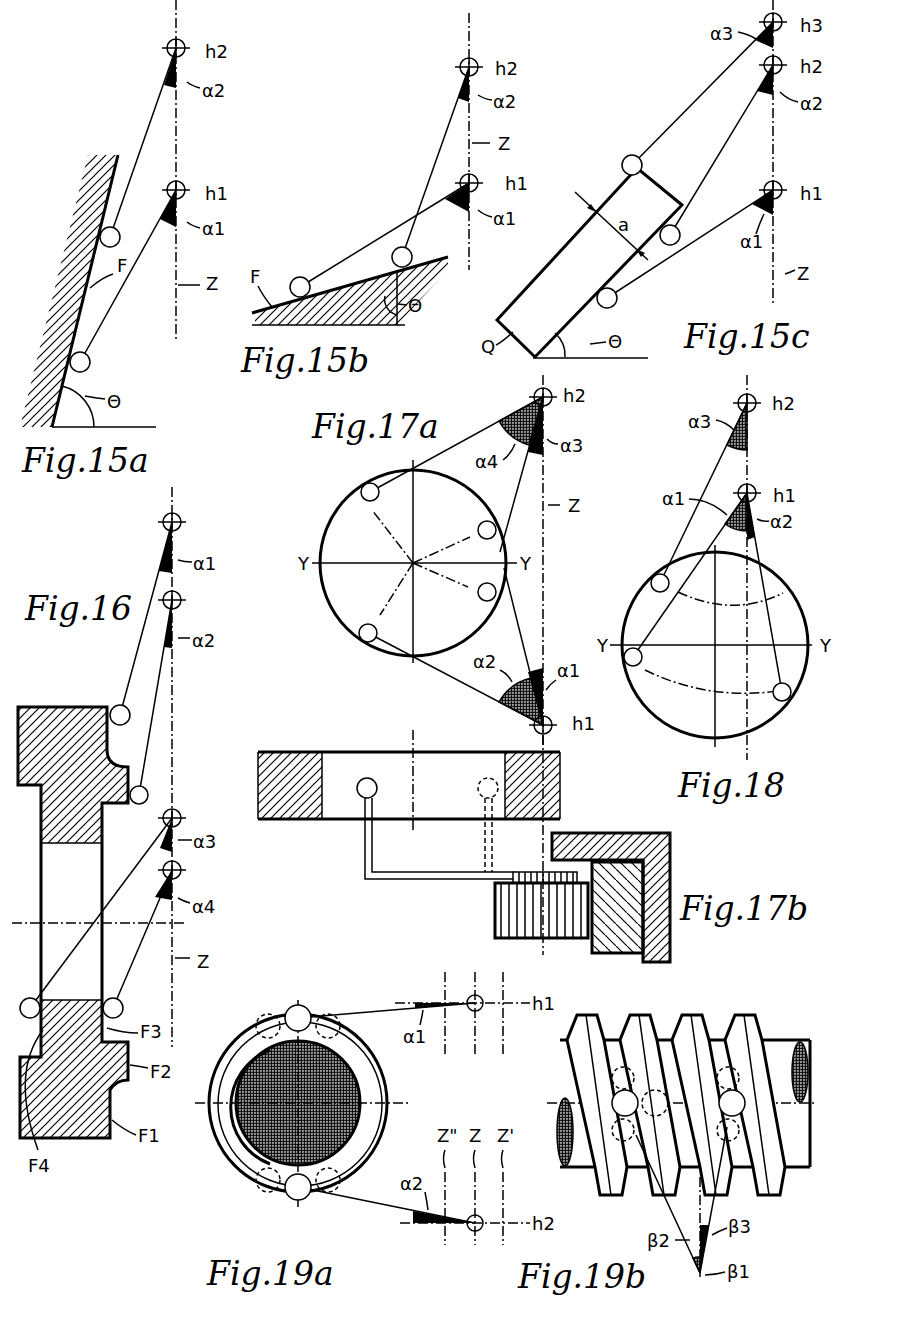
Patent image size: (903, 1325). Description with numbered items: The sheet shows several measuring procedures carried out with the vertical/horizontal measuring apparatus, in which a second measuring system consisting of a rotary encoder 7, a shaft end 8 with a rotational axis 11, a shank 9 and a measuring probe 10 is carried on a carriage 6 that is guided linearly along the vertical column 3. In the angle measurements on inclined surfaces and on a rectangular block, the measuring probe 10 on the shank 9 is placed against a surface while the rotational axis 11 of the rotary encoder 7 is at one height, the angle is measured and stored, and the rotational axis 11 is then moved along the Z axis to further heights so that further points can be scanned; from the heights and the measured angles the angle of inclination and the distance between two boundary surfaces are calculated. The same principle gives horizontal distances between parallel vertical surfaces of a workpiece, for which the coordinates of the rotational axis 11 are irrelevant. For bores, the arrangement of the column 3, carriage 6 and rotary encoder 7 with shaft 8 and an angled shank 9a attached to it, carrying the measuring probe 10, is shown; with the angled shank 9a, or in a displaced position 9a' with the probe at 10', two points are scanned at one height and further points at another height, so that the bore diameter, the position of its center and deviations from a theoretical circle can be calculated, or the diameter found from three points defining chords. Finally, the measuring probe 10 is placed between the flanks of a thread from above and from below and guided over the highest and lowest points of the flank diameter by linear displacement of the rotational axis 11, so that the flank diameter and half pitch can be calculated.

In FIG. 17B, the vertical column 3 is at (669, 851).
In FIG. 17B, the carriage 6 is at (610, 954).
In FIG. 17B, the rotary encoder 7 is at (495, 921).
In FIG. 17B, the shaft end 8 is at (531, 871).
In FIG. 15A, the shank 9 is at (151, 114).
In FIG. 15B, the shank 9 is at (430, 180).
In FIG. 15C, the shank 9 is at (699, 95).
In FIG. 16, the shank 9 is at (135, 660).
In FIG. 17B, the angled shank 9a is at (439, 852).
In FIG. 17B, the bent rod (alternate position) 9a' is at (466, 835).
In FIG. 15A, the measuring probe 10 is at (108, 293).
In FIG. 15B, the measuring probe 10 is at (367, 264).
In FIG. 15C, the measuring probe 10 is at (649, 226).
In FIG. 17A, the measuring probe 10 is at (350, 571).
In FIG. 17B, the measuring probe 10 is at (370, 758).
In FIG. 18, the measuring probe 10 is at (633, 618).
In FIG. 16, the measuring probe 10 is at (109, 847).
In FIG. 19A, the measuring probe 10 is at (298, 1101).
In FIG. 19B, the measuring probe 10 is at (680, 1106).
In FIG. 17A, the rolling ball (alternate position) 10' is at (471, 564).
In FIG. 17B, the rolling ball (alternate position) 10' is at (477, 758).
In FIG. 18, the rolling ball (alternate position) 10' is at (797, 707).
In FIG. 19B, the rolling ball (alternate position) 10' is at (640, 1160).
In FIG. 17B, the rotational axis 11 is at (545, 945).
In FIG. 16, the rotational axis 11 is at (183, 515).